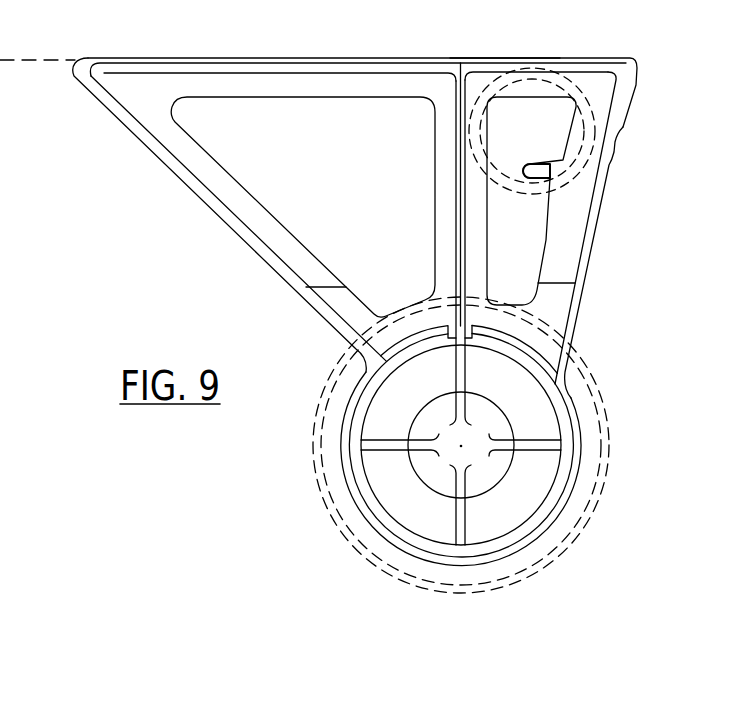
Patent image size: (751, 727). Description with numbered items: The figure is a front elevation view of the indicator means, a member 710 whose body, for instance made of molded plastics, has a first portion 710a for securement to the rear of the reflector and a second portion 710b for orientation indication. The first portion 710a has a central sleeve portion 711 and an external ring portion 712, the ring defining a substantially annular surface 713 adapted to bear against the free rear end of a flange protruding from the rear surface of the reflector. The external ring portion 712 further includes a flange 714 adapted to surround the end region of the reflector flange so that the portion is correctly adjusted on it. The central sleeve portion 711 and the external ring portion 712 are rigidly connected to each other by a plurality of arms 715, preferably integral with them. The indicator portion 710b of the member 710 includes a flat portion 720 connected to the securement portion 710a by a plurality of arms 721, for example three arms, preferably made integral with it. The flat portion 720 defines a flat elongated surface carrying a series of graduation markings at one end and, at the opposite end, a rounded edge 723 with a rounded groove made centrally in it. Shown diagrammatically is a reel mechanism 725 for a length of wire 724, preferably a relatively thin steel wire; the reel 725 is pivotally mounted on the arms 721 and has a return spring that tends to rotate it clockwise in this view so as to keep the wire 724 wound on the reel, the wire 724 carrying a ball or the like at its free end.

The member 710 is at (222, 293).
The first portion 710a is at (594, 478).
The second portion 710b is at (612, 40).
The central sleeve portion 711 is at (417, 480).
The external ring portion 712 is at (536, 516).
The annular surface 713 is at (557, 402).
The flange 714 is at (581, 425).
The arms 715 is at (388, 437).
The flat portion 720 is at (245, 58).
The arms 721 is at (443, 188).
The rounded edge 723 is at (632, 74).
The wire 724 is at (503, 57).
The reel mechanism 725 is at (473, 79).